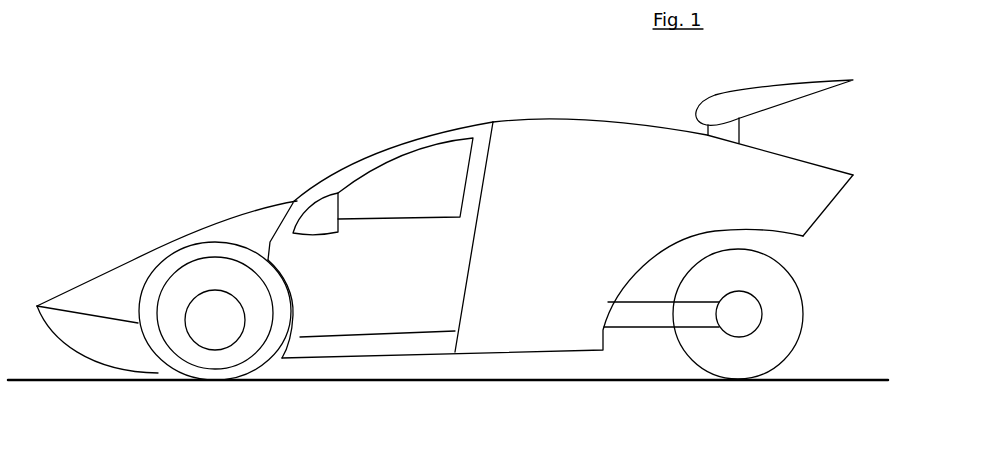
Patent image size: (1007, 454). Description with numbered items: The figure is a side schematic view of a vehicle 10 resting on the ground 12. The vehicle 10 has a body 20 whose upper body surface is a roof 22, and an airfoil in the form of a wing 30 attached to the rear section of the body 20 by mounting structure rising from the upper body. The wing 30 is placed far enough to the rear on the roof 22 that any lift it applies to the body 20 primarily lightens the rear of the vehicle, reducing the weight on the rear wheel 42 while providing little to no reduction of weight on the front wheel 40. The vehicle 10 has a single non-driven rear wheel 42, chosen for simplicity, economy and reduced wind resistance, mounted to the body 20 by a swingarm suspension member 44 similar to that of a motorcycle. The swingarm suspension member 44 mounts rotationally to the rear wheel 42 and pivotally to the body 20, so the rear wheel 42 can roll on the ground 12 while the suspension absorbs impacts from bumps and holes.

The vehicle 10 is at (200, 147).
The ground 12 is at (826, 369).
The body 20 is at (545, 249).
The roof 22 is at (514, 90).
The wing 30 is at (734, 116).
The front wheel 40 is at (226, 326).
The rear wheel 42 is at (789, 343).
The swingarm suspension member 44 is at (642, 315).